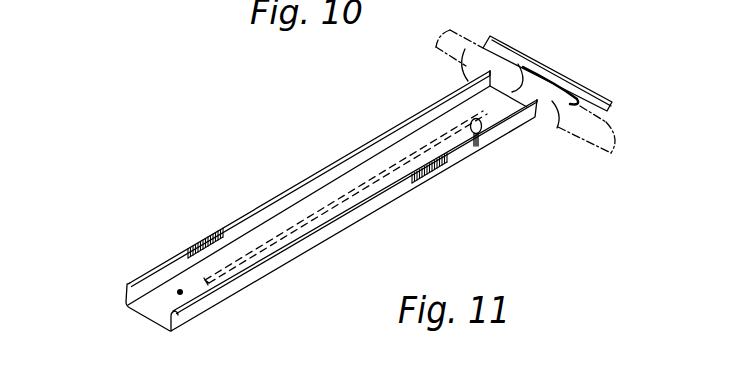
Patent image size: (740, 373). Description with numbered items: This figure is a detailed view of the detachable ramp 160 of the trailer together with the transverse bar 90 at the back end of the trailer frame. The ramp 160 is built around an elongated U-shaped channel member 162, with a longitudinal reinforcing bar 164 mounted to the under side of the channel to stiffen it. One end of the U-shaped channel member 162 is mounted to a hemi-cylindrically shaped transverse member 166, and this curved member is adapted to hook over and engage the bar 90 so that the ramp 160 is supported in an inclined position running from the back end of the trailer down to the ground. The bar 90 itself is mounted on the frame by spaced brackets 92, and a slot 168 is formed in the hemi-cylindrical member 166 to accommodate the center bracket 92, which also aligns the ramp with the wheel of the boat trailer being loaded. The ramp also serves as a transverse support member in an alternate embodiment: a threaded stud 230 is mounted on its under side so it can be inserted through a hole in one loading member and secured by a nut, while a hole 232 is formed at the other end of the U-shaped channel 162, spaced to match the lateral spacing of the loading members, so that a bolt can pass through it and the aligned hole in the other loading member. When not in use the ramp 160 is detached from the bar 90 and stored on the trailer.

The transverse bar 90 is at (620, 115).
The bracket 92 is at (540, 70).
The detachable ramp 160 is at (517, 136).
The U-shaped channel member 162 is at (376, 199).
The longitudinal reinforcing bar 164 is at (293, 241).
The hemi-cylindrically shaped transverse member 166 is at (556, 90).
The slot 168 is at (518, 64).
The threaded stud 230 is at (473, 146).
The hole 232 is at (180, 292).